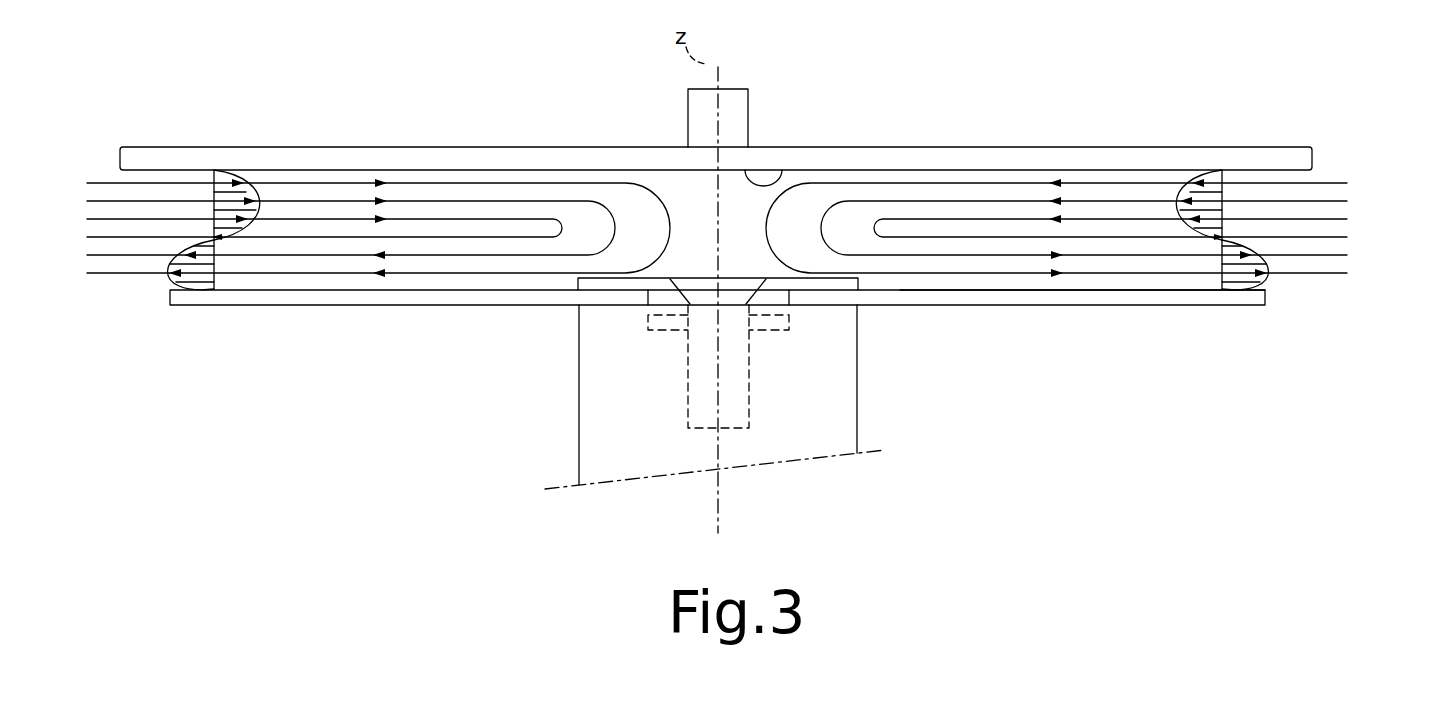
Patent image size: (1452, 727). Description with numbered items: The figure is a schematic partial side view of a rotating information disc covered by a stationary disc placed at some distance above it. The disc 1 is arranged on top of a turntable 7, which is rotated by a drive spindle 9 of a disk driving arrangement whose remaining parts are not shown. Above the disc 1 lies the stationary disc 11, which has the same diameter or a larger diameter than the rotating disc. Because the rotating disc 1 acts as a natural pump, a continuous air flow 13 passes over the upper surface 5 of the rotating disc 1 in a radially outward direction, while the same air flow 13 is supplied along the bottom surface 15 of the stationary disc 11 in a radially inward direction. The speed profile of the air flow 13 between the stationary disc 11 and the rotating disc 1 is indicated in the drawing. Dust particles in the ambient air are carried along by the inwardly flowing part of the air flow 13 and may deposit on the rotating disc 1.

The disc 1 is at (1266, 293).
The upper surface 5 is at (1112, 292).
The turntable 7 is at (842, 362).
The drive spindle 9 is at (700, 358).
The stationary disc 11 is at (1160, 160).
The air flow 13 is at (1380, 175).
The bottom surface 15 is at (782, 168).